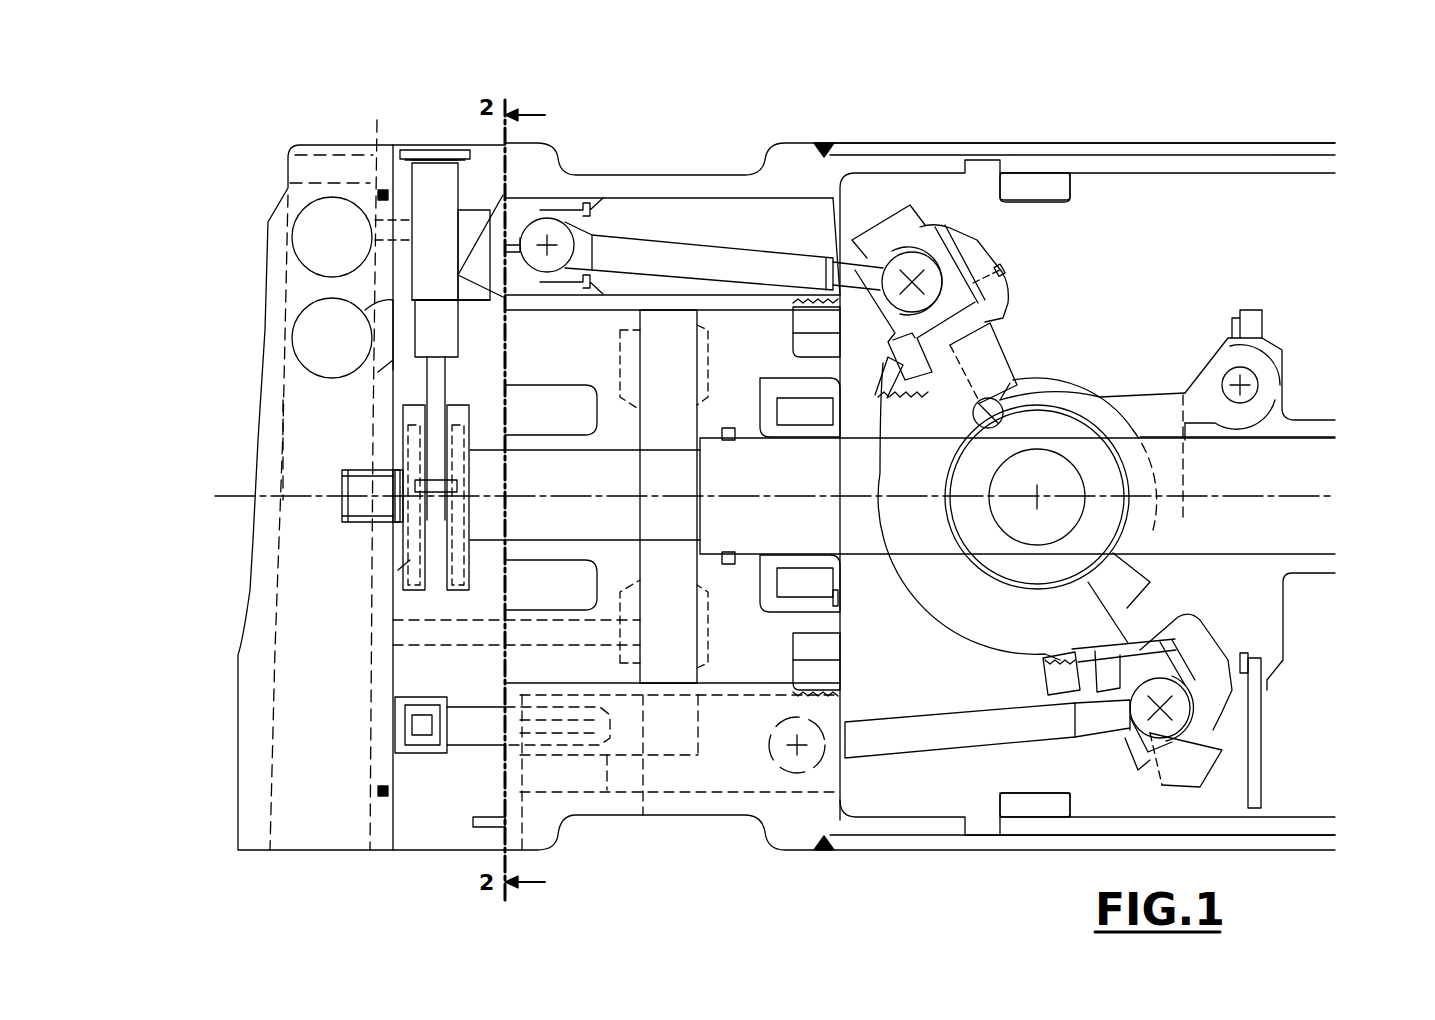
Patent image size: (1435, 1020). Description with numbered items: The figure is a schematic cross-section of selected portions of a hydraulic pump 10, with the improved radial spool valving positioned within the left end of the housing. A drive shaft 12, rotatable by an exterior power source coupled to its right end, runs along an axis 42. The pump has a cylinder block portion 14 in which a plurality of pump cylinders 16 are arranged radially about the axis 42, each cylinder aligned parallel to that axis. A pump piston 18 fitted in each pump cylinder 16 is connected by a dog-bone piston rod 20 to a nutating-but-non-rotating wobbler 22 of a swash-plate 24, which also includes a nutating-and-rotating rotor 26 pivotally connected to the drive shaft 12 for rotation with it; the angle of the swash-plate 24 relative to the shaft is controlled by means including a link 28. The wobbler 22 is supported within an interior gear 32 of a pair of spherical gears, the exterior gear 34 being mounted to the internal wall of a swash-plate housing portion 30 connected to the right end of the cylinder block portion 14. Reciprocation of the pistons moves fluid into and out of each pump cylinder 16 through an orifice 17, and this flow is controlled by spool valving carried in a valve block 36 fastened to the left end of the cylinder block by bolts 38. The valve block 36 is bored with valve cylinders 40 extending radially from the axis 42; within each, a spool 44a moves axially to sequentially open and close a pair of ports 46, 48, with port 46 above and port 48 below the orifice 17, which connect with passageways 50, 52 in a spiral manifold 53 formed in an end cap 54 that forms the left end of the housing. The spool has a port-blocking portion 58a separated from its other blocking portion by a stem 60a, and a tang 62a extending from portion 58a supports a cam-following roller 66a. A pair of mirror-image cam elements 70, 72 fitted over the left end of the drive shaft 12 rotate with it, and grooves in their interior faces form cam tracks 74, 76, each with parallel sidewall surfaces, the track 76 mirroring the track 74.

The hydraulic pump 10 is at (1040, 100).
The drive shaft 12 is at (656, 532).
The cylinder block portion 14 is at (674, 805).
The pump cylinders 16 is at (693, 200).
The orifice 17 is at (470, 284).
The pump piston 18 is at (545, 190).
The piston rod 20 is at (765, 240).
The wobbler 22 is at (1152, 752).
The swash-plate 24 is at (1095, 286).
The rotor 26 is at (1138, 622).
The link 28 is at (1148, 377).
The swash-plate housing portion 30 is at (1000, 842).
The interior gear 32 is at (878, 228).
The exterior gear 34 is at (1057, 195).
The valve block 36 is at (448, 828).
The bolts 38 is at (485, 735).
The valve cylinders 40 is at (413, 178).
The axis 42 is at (302, 497).
The spool 44a is at (425, 198).
The port 46 is at (372, 125).
The port 48 is at (385, 378).
The passageway 50 is at (293, 250).
The passageway 52 is at (315, 303).
The spiral manifold 53 is at (258, 530).
The end cap 54 is at (278, 398).
The port-blocking portion 58a is at (440, 326).
The stem 60a is at (438, 278).
The tang 62a is at (440, 386).
The cam-following roller 66a is at (448, 482).
The cam element 70 is at (412, 543).
The cam element 72 is at (458, 568).
The cam track 74 is at (395, 588).
The cam track 76 is at (460, 578).